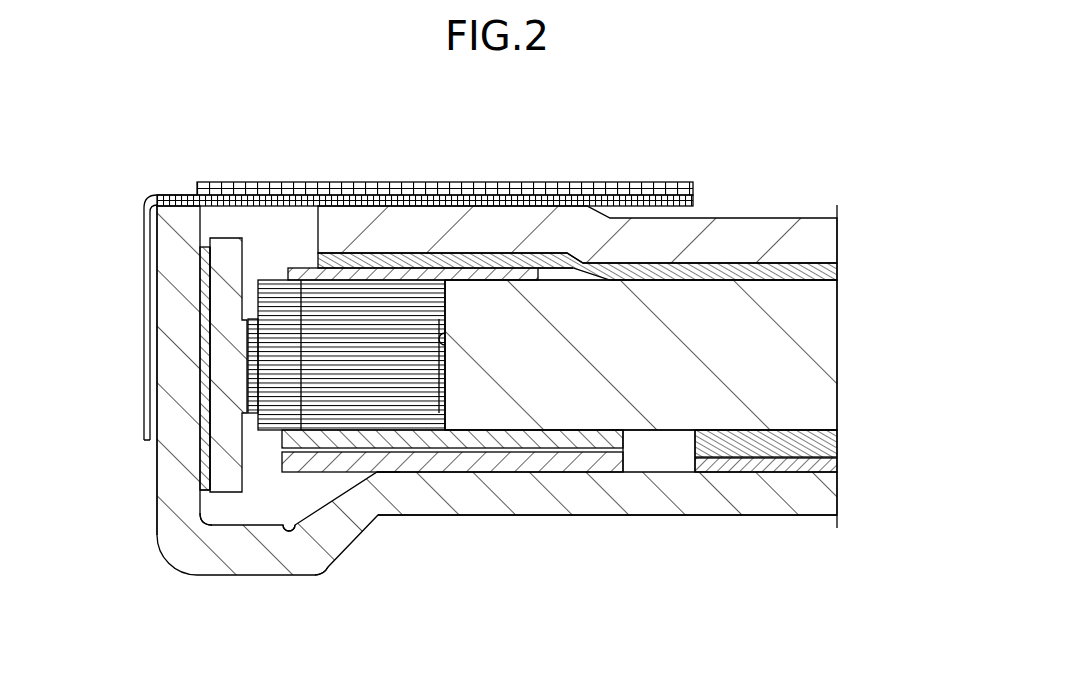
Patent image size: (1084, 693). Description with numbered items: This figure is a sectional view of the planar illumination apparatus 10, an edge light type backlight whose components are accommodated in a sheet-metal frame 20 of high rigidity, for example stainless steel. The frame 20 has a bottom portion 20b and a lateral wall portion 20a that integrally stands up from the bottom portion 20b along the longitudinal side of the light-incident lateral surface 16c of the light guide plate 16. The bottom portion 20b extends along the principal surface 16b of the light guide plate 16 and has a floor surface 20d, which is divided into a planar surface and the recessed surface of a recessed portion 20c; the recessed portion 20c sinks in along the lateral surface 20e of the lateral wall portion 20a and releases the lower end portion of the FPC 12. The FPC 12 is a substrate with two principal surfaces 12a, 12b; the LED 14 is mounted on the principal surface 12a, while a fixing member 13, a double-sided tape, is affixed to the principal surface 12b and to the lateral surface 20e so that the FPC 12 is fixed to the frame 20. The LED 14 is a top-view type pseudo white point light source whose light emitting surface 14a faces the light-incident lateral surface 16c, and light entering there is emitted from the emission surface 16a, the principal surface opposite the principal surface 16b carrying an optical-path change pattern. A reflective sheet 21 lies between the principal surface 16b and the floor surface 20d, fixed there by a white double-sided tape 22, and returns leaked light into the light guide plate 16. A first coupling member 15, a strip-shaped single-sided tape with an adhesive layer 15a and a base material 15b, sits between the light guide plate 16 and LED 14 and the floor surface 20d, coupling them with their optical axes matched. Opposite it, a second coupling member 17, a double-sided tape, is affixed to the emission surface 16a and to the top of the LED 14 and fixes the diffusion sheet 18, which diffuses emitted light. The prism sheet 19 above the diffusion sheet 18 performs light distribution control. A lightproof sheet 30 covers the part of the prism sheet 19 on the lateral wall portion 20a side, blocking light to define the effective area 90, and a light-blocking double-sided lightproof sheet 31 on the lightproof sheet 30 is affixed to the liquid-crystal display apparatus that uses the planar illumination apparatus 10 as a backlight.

The planar illumination apparatus 10 is at (664, 146).
The effective area 90 is at (818, 185).
The FPC 12 is at (210, 526).
The principal surface 12a is at (227, 488).
The principal surface 12b is at (210, 460).
The fixing member 13 is at (208, 489).
The LED 14 is at (272, 417).
The light emitting surface 14a is at (447, 397).
The first coupling member 15 is at (543, 588).
The adhesive layer 15a is at (607, 440).
The base material 15b is at (565, 460).
The light guide plate 16 is at (833, 338).
The principal surface 16a is at (835, 300).
The principal surface 16b is at (835, 416).
The light-incident lateral surface 16c is at (446, 330).
The second coupling member 17 is at (297, 268).
The diffusion sheet 18 is at (835, 267).
The prism sheet 19 is at (834, 246).
The frame 20 is at (176, 222).
The lateral wall portion 20a is at (167, 487).
The bottom portion 20b is at (512, 500).
The recessed portion 20c is at (340, 575).
The floor surface 20d is at (660, 461).
The lateral surface 20e is at (213, 528).
The reflective sheet 21 is at (792, 438).
The double-sided tape 22 is at (837, 466).
The lightproof sheet 30 is at (373, 200).
The lightproof sheet 31 is at (428, 190).